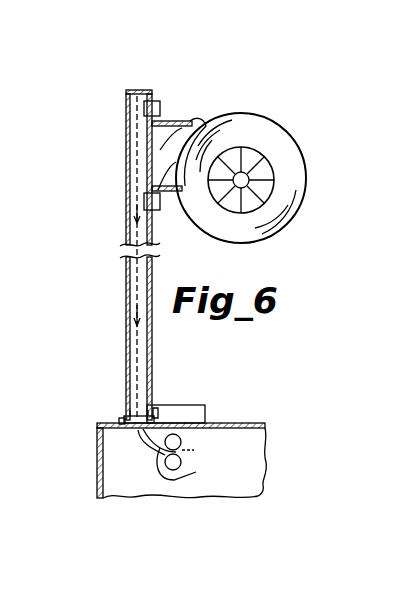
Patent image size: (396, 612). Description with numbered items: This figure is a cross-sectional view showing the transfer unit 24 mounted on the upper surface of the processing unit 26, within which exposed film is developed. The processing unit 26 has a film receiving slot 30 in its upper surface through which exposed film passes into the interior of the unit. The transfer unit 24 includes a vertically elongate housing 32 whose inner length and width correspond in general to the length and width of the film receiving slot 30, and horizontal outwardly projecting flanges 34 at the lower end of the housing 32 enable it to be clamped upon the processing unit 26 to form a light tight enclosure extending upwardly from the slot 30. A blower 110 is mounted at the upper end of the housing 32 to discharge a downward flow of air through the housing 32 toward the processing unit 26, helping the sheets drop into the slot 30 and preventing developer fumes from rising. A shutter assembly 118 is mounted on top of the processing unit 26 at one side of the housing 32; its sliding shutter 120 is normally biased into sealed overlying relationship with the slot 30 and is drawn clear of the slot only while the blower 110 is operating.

The transfer unit 24 is at (124, 193).
The processing unit 26 is at (217, 417).
The film receiving slot 30 is at (130, 408).
The housing 32 is at (126, 316).
The flanges 34 is at (120, 418).
The blower 110 is at (305, 92).
The shutter assembly 118 is at (194, 404).
The sliding shutter 120 is at (178, 478).